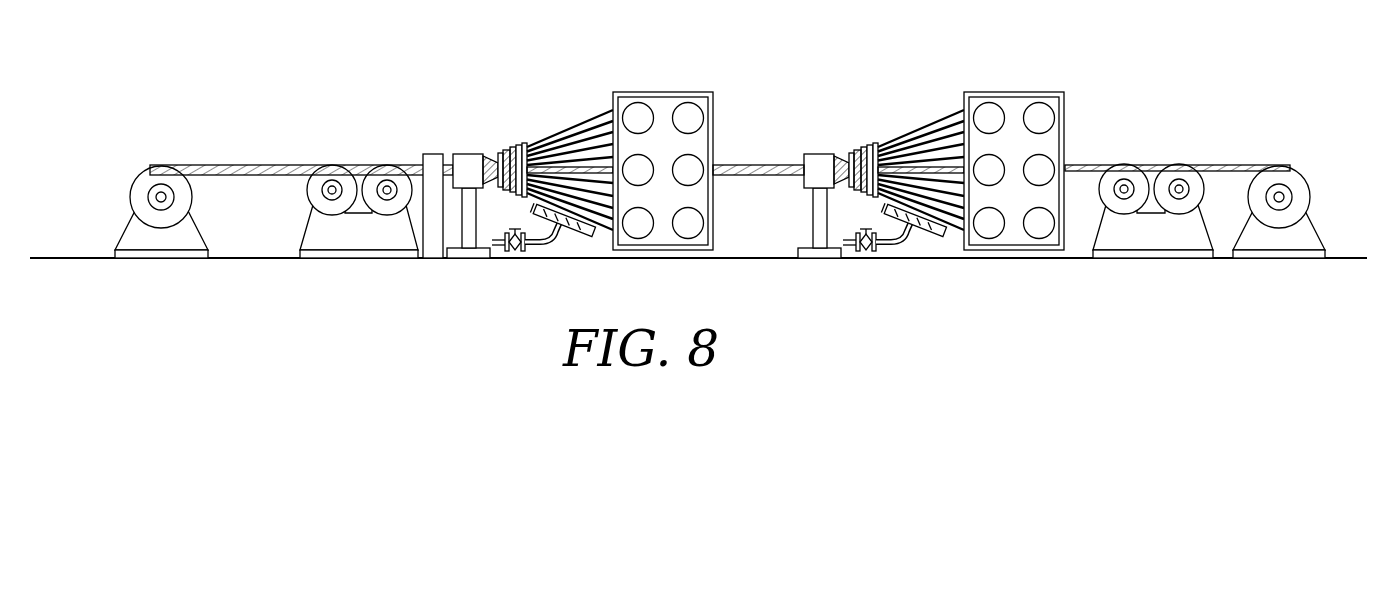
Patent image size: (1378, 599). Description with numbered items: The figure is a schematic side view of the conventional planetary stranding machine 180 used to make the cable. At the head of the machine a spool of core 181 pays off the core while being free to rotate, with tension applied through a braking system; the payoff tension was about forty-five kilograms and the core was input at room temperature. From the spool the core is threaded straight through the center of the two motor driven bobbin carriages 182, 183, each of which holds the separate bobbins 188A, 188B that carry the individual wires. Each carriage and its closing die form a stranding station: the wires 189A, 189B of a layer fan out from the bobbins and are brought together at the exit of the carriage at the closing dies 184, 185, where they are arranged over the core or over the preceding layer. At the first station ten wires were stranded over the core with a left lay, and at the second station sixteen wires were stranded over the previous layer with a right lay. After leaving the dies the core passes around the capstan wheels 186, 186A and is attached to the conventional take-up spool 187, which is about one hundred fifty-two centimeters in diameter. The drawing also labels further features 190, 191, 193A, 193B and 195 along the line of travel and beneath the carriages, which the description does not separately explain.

The planetary stranding machine 180 is at (222, 100).
The spool of core 181 is at (1290, 165).
The bobbin carriage 182 is at (1049, 150).
The bobbin carriage 183 is at (704, 91).
The closing die 184 is at (810, 174).
The closing die 185 is at (468, 152).
The capstan wheels 186 is at (386, 165).
The capstan wheels 186A is at (1180, 165).
The take-up spool 187 is at (149, 166).
The bobbins 188A is at (1014, 138).
The bobbins 188B is at (686, 101).
The wires of stranding layer 189A is at (899, 156).
The wires of stranding layer 189B is at (582, 134).
The finished cable 190 is at (1218, 164).
The core cable 191 is at (256, 164).
The second nozzle manifold and valve 193A is at (904, 256).
The first nozzle manifold and valve 193B is at (557, 244).
The guide plate 195 is at (431, 152).